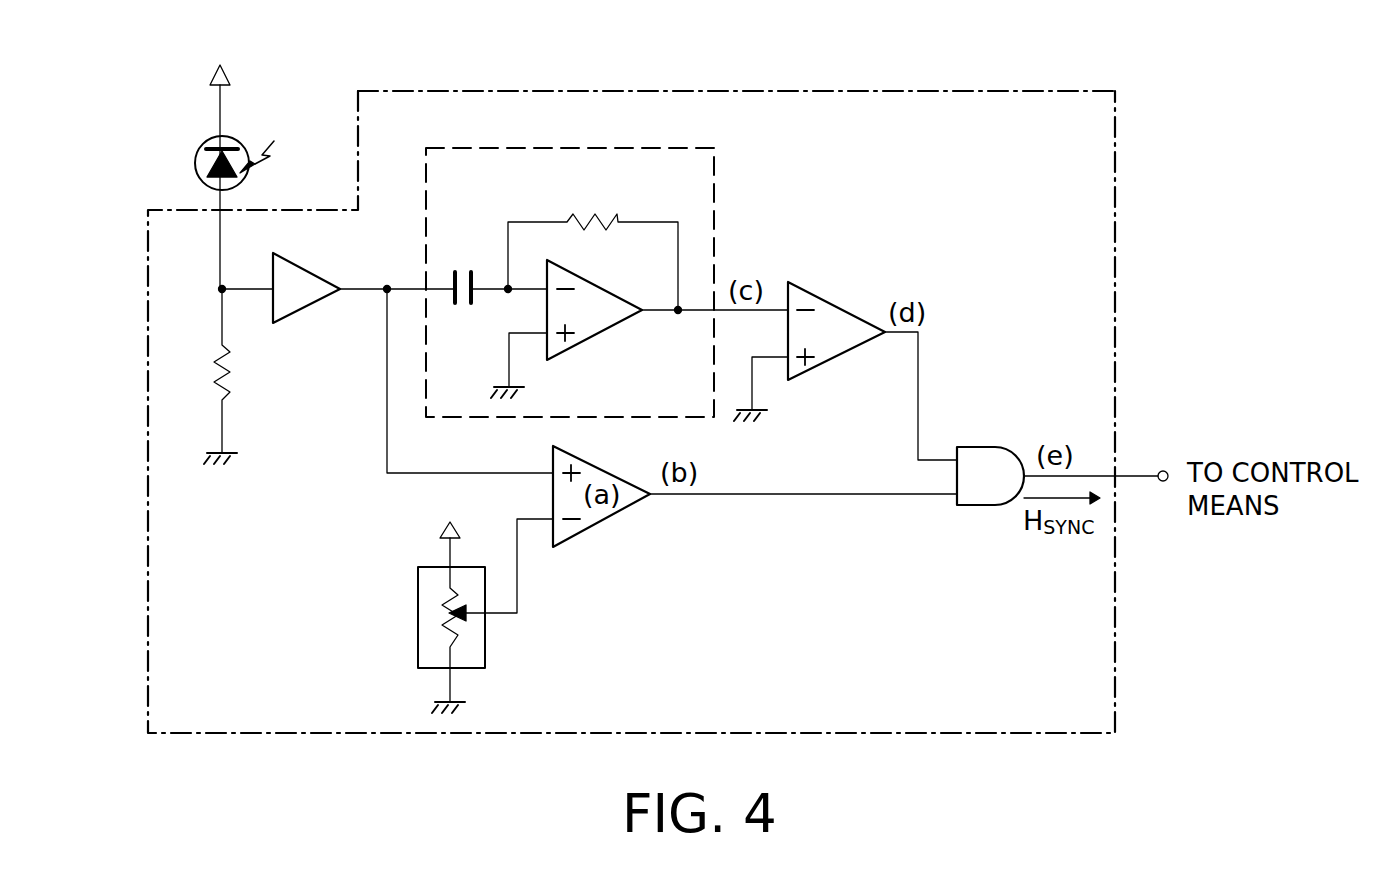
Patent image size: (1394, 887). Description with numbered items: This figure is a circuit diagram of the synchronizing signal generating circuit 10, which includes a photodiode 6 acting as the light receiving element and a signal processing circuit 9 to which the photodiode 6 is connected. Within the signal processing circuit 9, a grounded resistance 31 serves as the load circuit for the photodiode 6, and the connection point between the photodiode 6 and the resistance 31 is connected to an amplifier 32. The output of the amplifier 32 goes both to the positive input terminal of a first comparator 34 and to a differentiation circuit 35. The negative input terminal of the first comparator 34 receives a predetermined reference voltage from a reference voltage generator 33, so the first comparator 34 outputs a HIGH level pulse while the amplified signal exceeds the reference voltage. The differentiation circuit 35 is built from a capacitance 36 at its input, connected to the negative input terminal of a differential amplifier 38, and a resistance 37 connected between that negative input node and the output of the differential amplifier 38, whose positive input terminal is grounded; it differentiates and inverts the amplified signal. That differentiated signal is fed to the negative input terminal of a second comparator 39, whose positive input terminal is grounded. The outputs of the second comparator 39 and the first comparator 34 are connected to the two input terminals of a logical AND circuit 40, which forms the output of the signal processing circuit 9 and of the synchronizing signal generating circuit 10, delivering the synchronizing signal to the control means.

The photodiode 6 is at (196, 161).
The signal processing circuit 9 is at (952, 91).
The synchronizing signal generating circuit 10 is at (667, 72).
The resistance (resistor) 31 is at (236, 370).
The amplifier 32 is at (302, 270).
The reference voltage generator 33 is at (418, 636).
The first comparator 34 is at (612, 523).
The differentiation circuit 35 is at (714, 180).
The capacitance (capacitor) 36 is at (464, 270).
The resistance (resistor) 37 is at (594, 220).
The differential amplifier 38 is at (604, 338).
The second comparator 39 is at (842, 356).
The logical AND circuit 40 is at (985, 447).